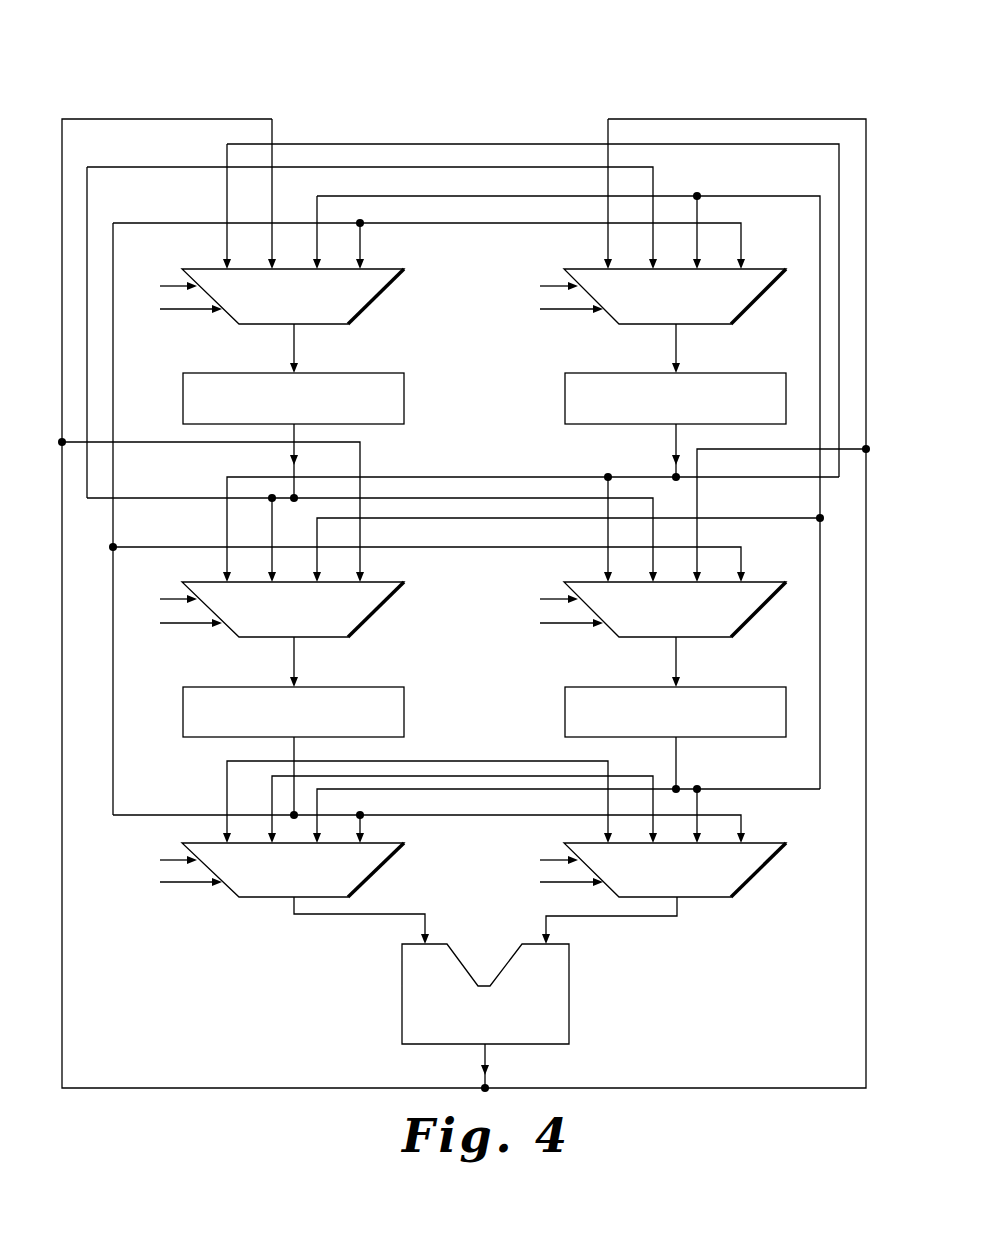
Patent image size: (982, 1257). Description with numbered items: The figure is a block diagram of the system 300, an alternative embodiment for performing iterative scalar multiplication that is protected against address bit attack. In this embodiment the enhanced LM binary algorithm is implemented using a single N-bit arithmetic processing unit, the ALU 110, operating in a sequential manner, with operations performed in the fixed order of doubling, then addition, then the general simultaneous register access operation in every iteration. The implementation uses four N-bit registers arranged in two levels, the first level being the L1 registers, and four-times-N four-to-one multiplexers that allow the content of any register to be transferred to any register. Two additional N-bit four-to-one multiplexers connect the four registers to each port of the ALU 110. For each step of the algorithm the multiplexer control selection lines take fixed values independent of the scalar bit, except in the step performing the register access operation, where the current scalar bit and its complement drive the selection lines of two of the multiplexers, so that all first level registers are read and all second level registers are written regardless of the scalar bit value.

The system 300 is at (540, 72).
The first level registers L1 is at (404, 396).
The ALU 110 is at (569, 1005).